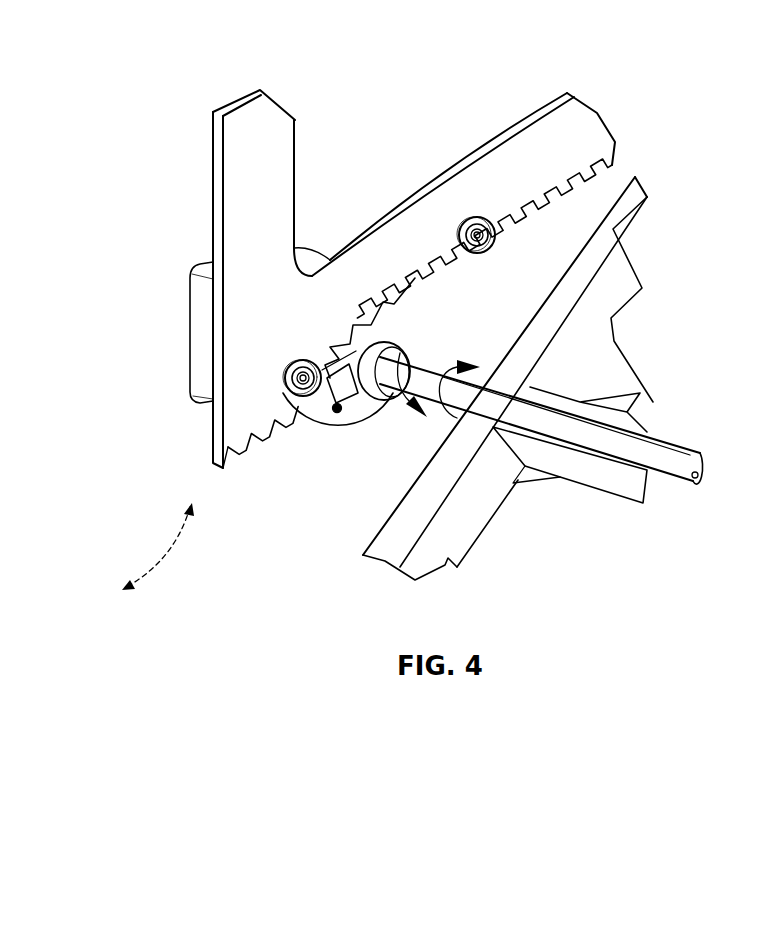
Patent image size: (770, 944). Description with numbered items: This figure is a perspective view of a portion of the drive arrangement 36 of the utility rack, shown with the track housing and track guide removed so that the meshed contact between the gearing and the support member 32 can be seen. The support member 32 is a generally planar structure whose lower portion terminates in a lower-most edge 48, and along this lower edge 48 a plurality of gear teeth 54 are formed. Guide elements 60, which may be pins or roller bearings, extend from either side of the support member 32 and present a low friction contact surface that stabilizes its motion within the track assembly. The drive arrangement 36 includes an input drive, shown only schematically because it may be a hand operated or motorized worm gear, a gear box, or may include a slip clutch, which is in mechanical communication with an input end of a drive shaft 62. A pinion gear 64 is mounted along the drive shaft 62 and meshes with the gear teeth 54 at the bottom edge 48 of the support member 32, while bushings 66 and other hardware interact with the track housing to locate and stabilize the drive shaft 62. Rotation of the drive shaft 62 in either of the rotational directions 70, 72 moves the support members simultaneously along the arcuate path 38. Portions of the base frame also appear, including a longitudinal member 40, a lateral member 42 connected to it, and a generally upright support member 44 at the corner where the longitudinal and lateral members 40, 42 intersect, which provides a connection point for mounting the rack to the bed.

The support member 32 is at (322, 150).
The drive arrangement 36 is at (186, 249).
The arcuate path 38 is at (158, 565).
The longitudinal member 40 is at (617, 483).
The lateral member 42 is at (625, 389).
The upright support member 44 is at (465, 528).
The lower-most edge 48 is at (230, 474).
The gear teeth 54 is at (262, 426).
The guide element 60 is at (460, 222).
The drive shaft 62 is at (683, 456).
The pinion gear 64 is at (345, 407).
The bushing 66 is at (388, 400).
The rotational direction 70 is at (417, 347).
The rotational direction 72 is at (450, 365).